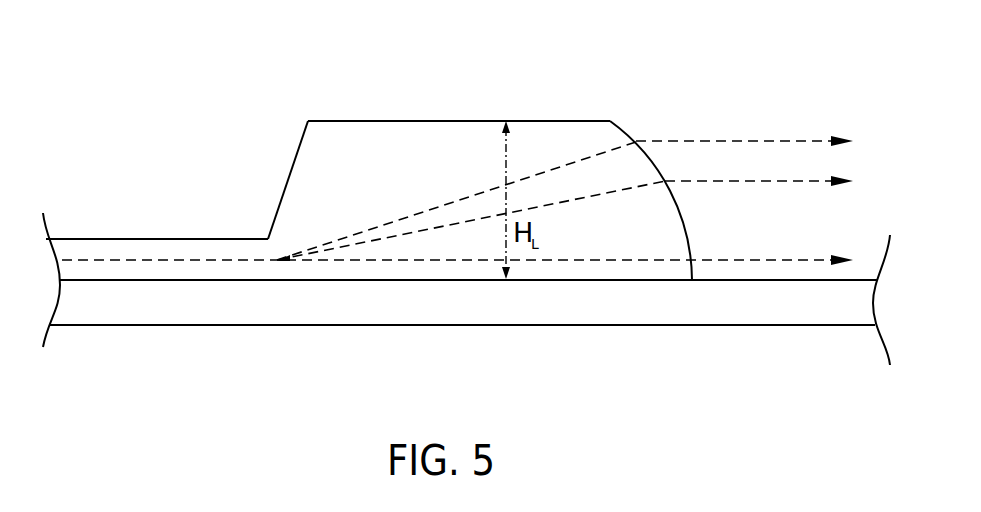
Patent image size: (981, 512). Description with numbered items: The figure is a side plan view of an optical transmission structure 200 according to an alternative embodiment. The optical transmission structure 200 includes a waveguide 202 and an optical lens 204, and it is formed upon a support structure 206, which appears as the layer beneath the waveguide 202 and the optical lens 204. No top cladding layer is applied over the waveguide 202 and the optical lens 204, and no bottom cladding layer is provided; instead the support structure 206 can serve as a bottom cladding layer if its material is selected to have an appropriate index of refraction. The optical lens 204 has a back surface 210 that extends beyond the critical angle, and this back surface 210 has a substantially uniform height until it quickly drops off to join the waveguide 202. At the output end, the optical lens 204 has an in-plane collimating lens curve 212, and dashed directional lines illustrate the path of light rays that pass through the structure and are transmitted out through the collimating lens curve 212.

The optical transmission structure 200 is at (254, 158).
The waveguide 202 is at (157, 238).
The optical lens 204 is at (533, 120).
The support structure 206 is at (537, 325).
The back surface 210 is at (345, 116).
The in-plane collimating lens curve 212 is at (642, 133).